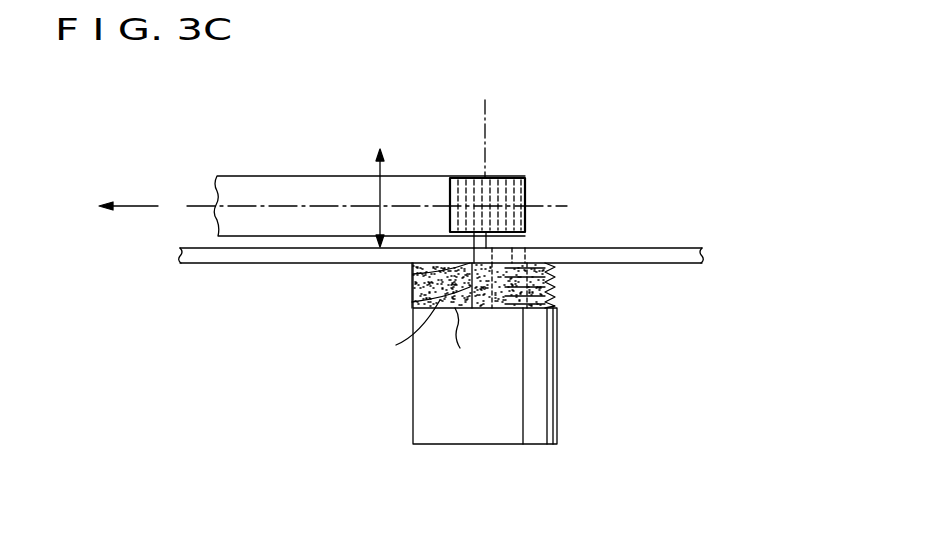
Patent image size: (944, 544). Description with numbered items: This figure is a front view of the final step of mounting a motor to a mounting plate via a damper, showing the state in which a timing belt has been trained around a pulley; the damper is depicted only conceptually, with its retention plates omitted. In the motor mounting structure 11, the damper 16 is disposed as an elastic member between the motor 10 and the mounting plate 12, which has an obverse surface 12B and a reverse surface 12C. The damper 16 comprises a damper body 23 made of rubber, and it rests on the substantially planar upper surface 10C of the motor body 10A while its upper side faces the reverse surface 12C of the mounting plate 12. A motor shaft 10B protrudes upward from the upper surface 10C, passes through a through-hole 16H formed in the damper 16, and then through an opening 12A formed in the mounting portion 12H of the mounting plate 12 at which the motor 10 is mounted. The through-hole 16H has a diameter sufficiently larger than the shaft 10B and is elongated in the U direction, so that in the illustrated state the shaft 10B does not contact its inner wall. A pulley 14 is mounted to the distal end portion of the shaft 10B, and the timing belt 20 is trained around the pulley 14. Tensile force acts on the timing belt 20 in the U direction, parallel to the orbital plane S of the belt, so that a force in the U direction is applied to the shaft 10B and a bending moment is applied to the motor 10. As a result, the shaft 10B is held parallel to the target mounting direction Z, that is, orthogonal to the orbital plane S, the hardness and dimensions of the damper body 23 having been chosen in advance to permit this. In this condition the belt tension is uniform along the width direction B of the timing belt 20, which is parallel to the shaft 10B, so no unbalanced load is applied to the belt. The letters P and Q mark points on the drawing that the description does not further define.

The motor 10 is at (596, 392).
The motor body 10A is at (547, 360).
The motor shaft 10B is at (482, 240).
The upper surface of motor body 10C is at (480, 376).
The motor mounting structure 11 is at (757, 122).
The mounting plate 12 is at (706, 255).
The opening 12A is at (412, 296).
The obverse surface 12B is at (205, 248).
The reverse surface 12C is at (680, 265).
The mounting portion 12H is at (430, 255).
The pulley 14 is at (500, 178).
The damper 16 is at (568, 302).
The through-hole 16H is at (396, 345).
The timing belt 20 is at (300, 176).
The damper body 23 is at (412, 302).
The target mounting direction Z is at (487, 118).
The orbital plane S is at (553, 193).
The width direction B is at (378, 179).
The U direction U is at (115, 210).
The point P is at (413, 274).
The point Q is at (558, 282).